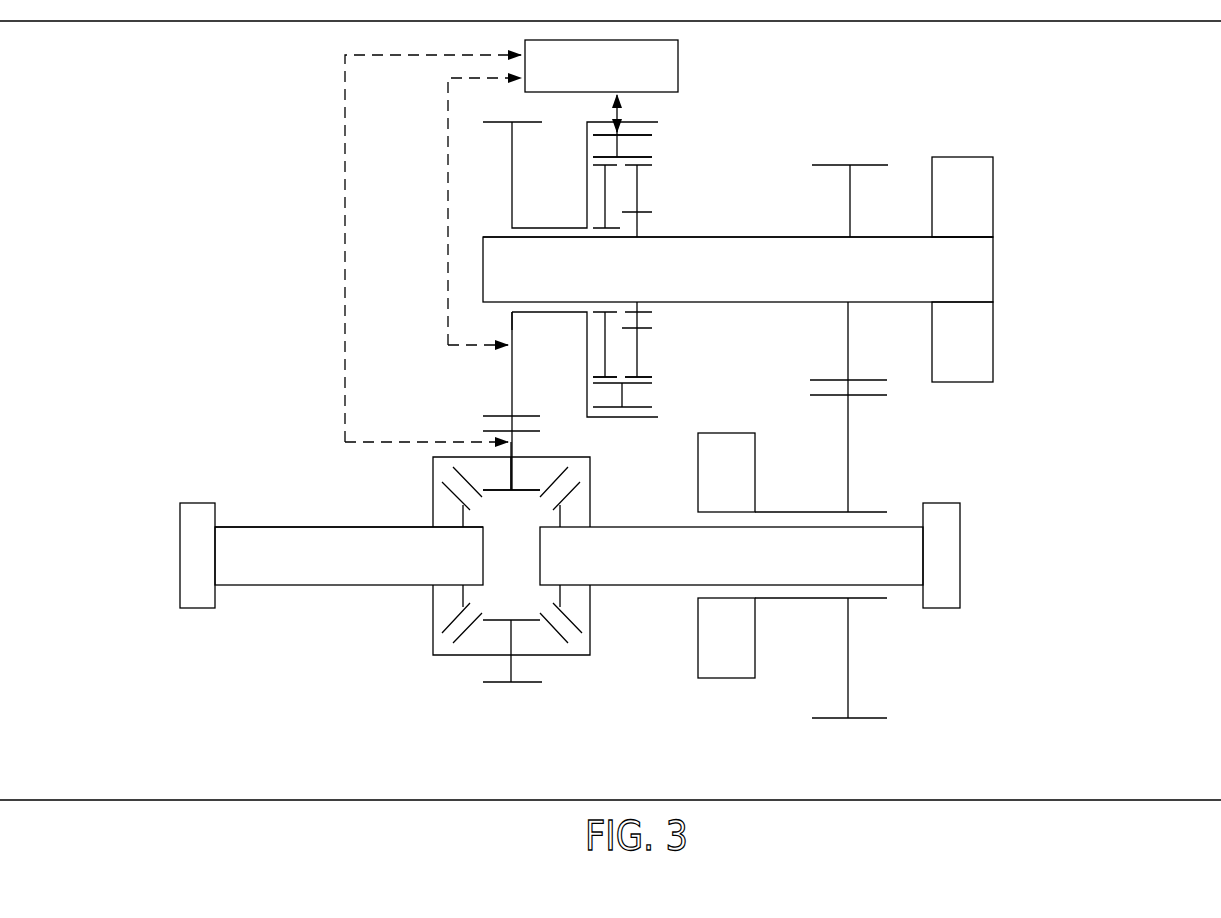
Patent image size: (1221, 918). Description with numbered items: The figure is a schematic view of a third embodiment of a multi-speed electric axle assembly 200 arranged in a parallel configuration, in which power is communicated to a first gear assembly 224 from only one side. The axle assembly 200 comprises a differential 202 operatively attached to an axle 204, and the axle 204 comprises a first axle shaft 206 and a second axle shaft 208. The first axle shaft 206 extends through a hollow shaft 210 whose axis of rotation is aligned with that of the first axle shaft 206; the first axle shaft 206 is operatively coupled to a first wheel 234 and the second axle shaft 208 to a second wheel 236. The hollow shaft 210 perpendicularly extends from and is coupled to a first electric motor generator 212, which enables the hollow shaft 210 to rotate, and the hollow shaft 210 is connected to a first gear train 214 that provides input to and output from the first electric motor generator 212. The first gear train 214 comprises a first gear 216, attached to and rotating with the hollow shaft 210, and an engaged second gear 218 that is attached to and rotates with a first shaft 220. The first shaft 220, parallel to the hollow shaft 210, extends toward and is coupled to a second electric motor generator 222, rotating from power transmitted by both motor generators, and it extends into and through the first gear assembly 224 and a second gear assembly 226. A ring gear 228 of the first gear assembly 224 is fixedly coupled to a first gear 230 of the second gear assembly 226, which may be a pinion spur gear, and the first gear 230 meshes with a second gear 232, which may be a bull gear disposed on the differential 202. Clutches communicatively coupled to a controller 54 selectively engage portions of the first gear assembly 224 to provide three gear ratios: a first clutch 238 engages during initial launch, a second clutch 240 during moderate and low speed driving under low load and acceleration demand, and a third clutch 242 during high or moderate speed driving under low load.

The controller 54 is at (611, 87).
The multi-speed electric axle assembly 200 is at (1051, 388).
The differential 202 is at (400, 700).
The axle 204 is at (257, 619).
The first axle shaft 206 is at (635, 590).
The second axle shaft 208 is at (317, 587).
The hollow shaft 210 is at (865, 600).
The first electric motor generator 212 is at (725, 680).
The first gear train 214 is at (896, 440).
The first gear 216 is at (850, 683).
The second gear 218 is at (865, 163).
The first shaft 220 is at (763, 237).
The second electric motor generator 222 is at (995, 193).
The first gear assembly 224 is at (700, 111).
The second gear assembly 226 is at (450, 388).
The ring gear 228 is at (643, 420).
The first gear 230 is at (513, 392).
The second gear 232 is at (515, 475).
The first wheel 234 is at (180, 545).
The second wheel 236 is at (960, 558).
The first clutch 238 is at (513, 350).
The second clutch 240 is at (517, 445).
The third clutch 242 is at (622, 147).